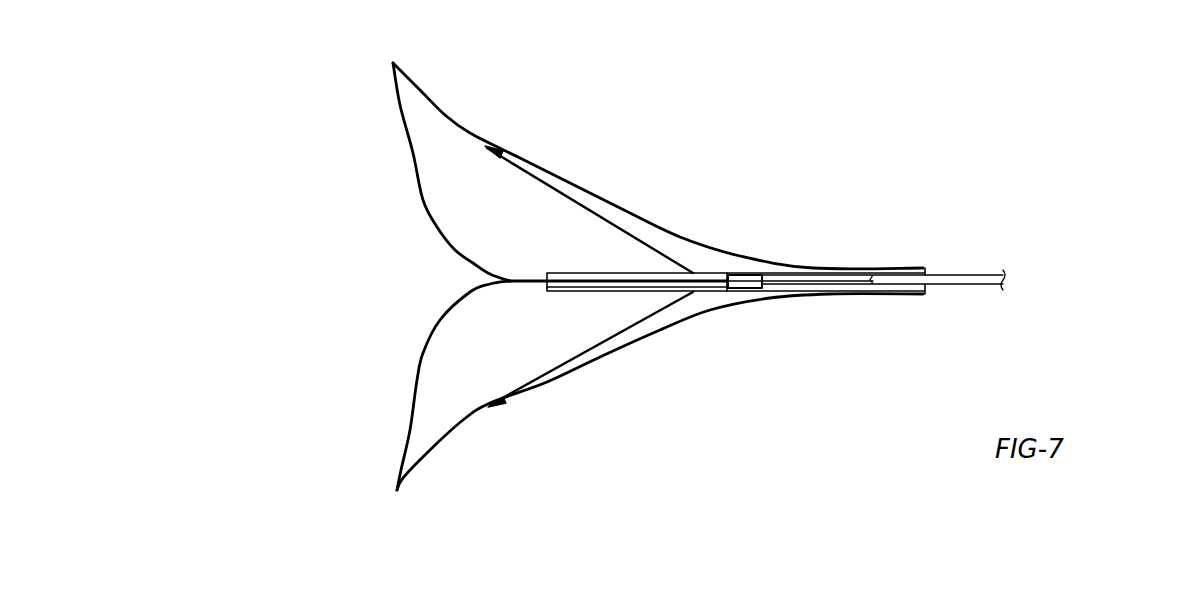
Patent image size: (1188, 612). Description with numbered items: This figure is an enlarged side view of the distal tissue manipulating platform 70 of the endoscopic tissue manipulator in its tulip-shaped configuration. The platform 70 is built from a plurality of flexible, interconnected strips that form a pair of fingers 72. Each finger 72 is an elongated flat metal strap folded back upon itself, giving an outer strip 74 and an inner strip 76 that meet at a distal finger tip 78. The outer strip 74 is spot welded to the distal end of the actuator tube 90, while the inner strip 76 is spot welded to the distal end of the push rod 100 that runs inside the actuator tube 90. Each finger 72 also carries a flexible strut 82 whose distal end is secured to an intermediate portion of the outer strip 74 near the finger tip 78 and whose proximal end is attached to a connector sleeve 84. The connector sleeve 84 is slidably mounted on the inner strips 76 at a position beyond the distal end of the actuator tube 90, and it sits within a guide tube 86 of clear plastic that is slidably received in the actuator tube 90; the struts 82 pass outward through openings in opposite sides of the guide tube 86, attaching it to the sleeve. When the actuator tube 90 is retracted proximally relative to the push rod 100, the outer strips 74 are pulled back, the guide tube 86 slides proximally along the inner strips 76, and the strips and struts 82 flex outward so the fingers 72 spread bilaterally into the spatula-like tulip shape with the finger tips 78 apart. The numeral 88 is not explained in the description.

The platform 70 is at (357, 163).
The fingers 72 is at (449, 110).
The outer strip 74 is at (682, 237).
The inner strip 76 is at (434, 229).
The finger tip 78 is at (393, 63).
The strut 82 is at (607, 211).
The connector sleeve 84 is at (748, 273).
The guide tube 86 is at (622, 291).
The junction 88 is at (767, 285).
The actuator tube 90 is at (923, 268).
The push rod 100 is at (965, 284).